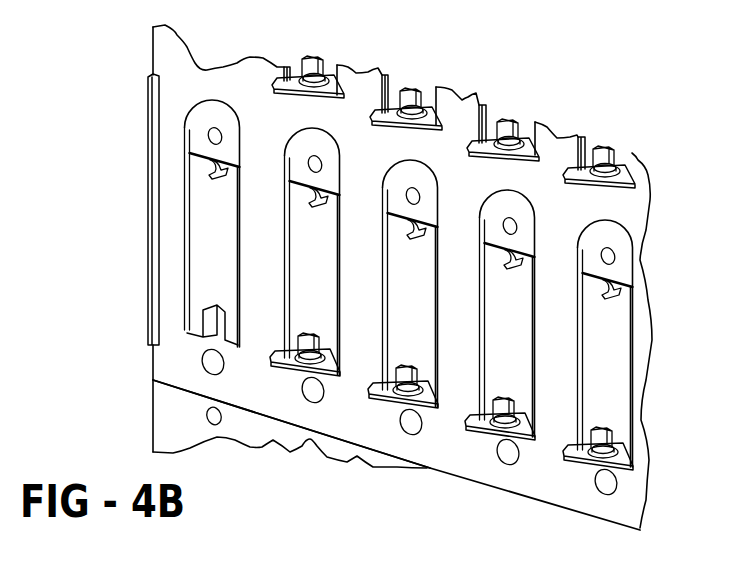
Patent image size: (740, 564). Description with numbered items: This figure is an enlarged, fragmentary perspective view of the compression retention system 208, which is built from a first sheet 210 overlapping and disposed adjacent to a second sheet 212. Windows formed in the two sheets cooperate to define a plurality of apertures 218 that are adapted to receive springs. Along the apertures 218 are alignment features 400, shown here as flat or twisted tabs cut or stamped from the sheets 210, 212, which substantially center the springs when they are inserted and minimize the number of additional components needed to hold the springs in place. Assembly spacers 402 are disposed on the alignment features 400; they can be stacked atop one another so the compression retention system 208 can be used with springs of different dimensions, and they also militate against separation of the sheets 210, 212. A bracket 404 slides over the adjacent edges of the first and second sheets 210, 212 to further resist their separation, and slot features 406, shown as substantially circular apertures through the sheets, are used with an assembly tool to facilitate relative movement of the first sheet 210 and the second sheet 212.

The compression retention system 208 is at (618, 128).
The first sheet 210 is at (167, 103).
The second sheet 212 is at (163, 403).
The apertures 218 is at (504, 373).
The alignment features 400 is at (208, 180).
The assembly spacers 402 is at (473, 137).
The brackets 404 is at (147, 165).
The slot feature 406 is at (208, 140).